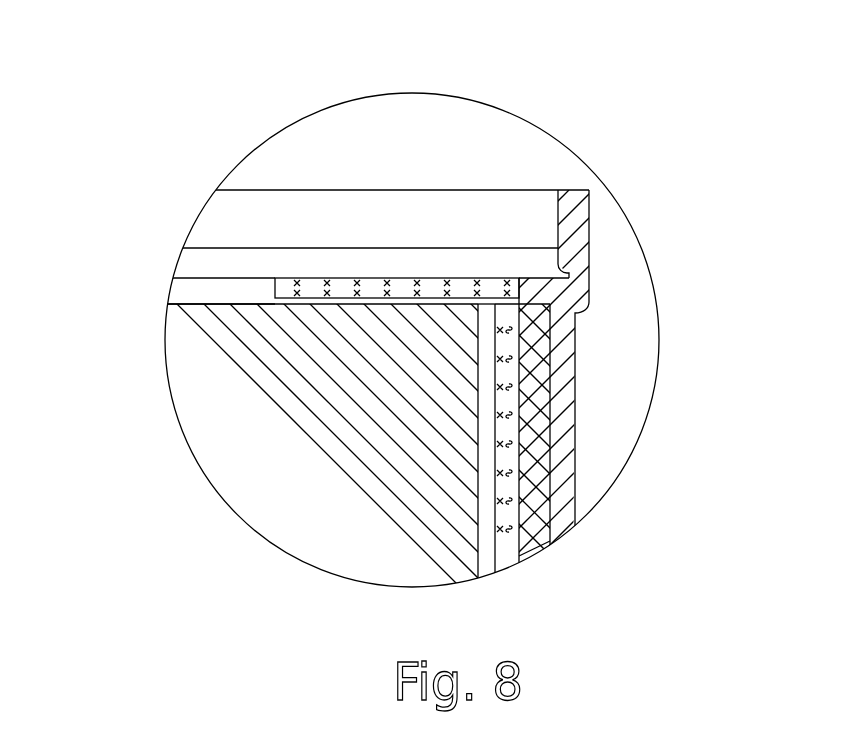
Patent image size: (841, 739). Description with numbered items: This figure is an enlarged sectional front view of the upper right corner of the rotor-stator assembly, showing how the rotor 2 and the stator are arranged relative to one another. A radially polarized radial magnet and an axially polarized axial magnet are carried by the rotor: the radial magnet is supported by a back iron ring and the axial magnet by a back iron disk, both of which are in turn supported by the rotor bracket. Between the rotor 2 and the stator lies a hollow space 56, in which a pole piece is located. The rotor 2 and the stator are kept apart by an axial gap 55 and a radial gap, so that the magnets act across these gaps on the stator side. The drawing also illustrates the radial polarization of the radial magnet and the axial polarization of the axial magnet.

The rotor 2 is at (266, 88).
The axial gap 55 is at (483, 574).
The hollow space 56 is at (533, 290).